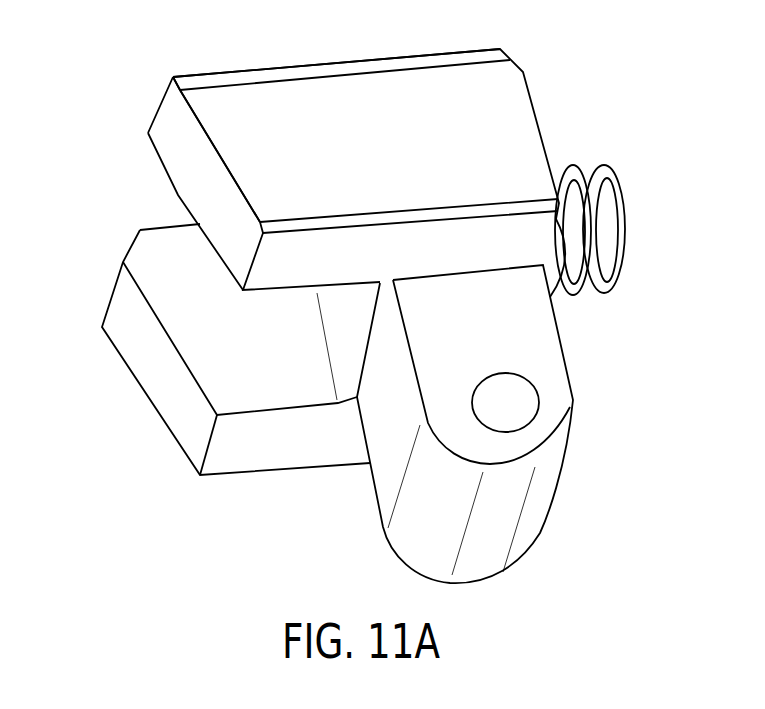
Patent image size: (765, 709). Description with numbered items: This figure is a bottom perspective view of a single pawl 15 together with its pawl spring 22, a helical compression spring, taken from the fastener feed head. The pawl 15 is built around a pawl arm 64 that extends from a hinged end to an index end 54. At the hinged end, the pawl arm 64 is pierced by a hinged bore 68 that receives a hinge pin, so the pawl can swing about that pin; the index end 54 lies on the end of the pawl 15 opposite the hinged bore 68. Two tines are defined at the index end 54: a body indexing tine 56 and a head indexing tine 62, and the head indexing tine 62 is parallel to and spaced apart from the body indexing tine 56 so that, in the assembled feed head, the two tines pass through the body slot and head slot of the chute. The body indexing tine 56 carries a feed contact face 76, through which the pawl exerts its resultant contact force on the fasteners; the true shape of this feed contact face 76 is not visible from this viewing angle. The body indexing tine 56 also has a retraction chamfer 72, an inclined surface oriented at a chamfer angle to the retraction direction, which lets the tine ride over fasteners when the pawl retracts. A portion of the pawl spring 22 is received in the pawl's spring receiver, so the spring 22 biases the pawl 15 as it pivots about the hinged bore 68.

The first pawl 15 is at (438, 105).
The first index end 54 is at (350, 62).
The feed contact face 76 is at (173, 77).
The body indexing tine 56 is at (183, 135).
The retraction chamfer 72 is at (245, 194).
The head indexing tine 62 is at (123, 315).
The pawl arm 64 is at (533, 345).
The hinged bore 68 is at (513, 423).
The pawl spring 22 is at (603, 163).